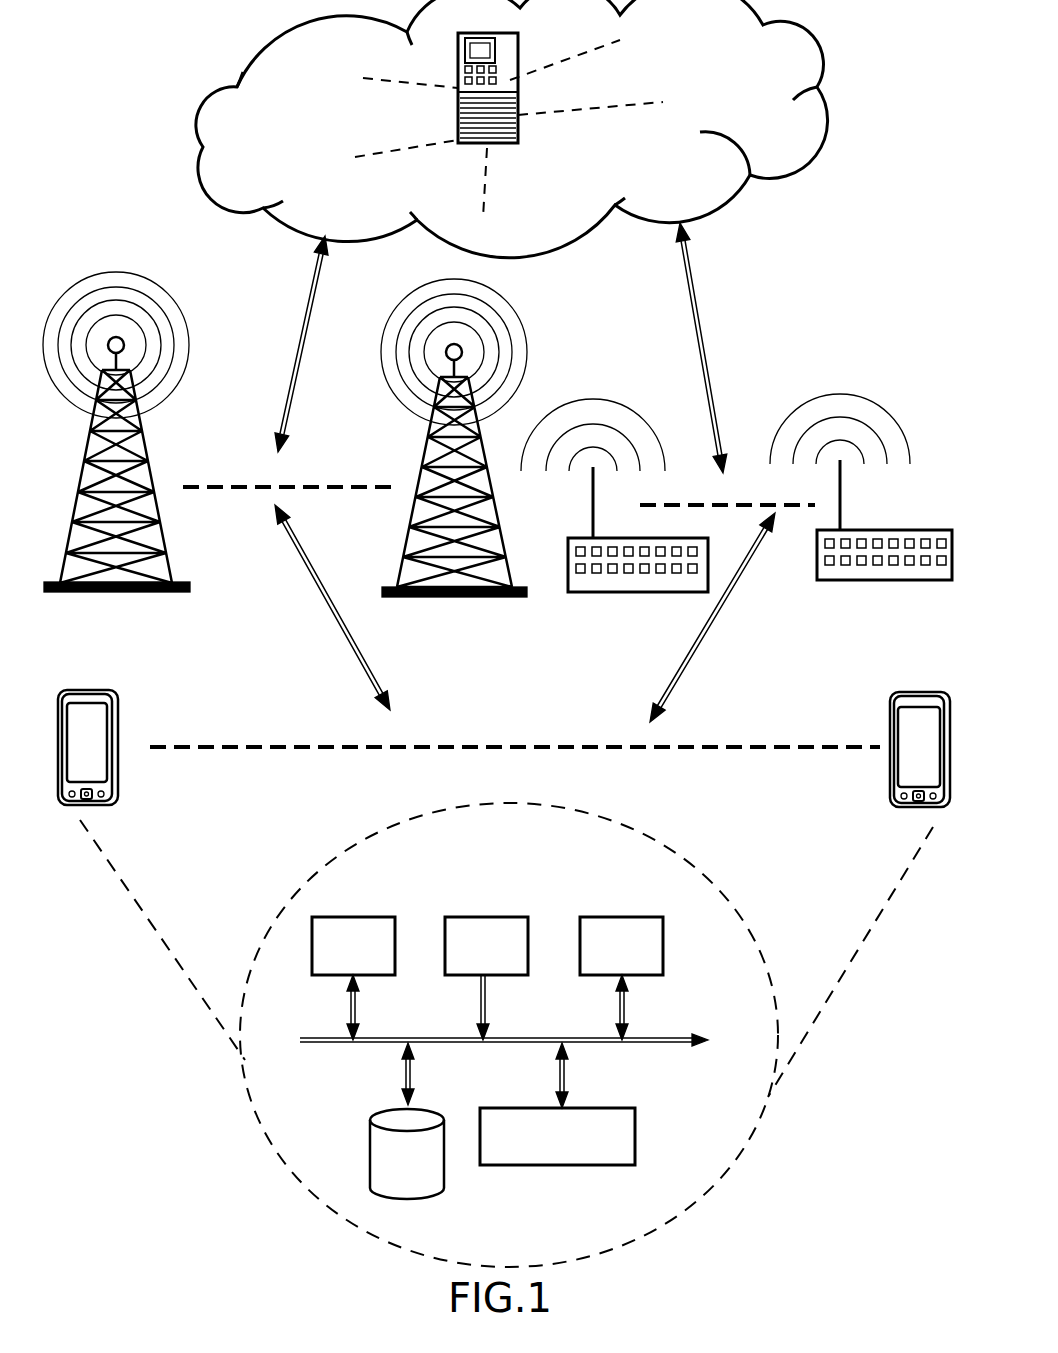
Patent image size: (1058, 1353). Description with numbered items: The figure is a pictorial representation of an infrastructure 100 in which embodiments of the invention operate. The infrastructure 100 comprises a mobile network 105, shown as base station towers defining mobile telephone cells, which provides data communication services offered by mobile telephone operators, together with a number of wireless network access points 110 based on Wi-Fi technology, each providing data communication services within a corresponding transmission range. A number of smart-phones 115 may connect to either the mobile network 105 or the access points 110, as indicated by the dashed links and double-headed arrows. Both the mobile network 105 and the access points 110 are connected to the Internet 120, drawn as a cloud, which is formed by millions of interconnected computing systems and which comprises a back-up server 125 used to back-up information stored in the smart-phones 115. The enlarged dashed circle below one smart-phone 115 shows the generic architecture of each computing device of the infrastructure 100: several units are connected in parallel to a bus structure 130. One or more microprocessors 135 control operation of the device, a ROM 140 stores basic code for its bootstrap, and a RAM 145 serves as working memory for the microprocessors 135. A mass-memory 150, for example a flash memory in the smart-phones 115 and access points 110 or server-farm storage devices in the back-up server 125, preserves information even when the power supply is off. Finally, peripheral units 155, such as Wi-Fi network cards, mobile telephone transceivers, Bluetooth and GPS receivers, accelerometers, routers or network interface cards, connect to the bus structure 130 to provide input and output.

The infrastructure 100 is at (176, 1145).
The mobile network 105 is at (115, 595).
The wireless network access point 110 is at (662, 592).
The smart-phone 115 is at (118, 765).
The Internet 120 is at (235, 63).
The back-up server 125 is at (458, 100).
The bus structure 130 is at (670, 1043).
The microprocessor 135 is at (367, 917).
The ROM 140 is at (477, 917).
The RAM 145 is at (622, 917).
The mass-memory 150 is at (377, 1110).
The peripheral units 155 is at (580, 1165).